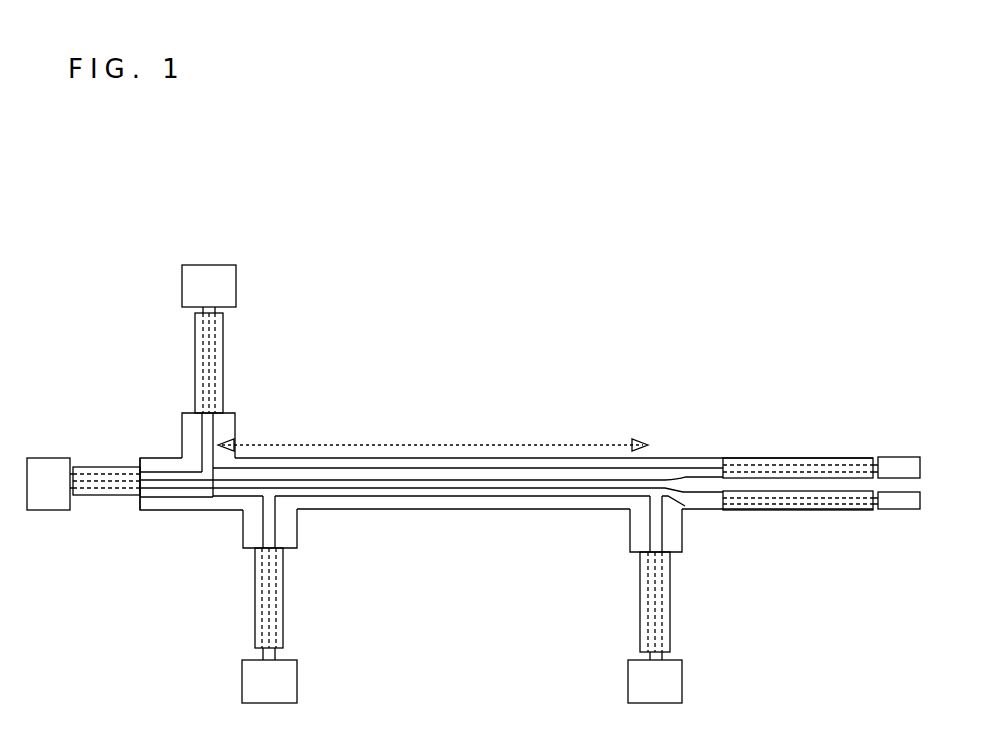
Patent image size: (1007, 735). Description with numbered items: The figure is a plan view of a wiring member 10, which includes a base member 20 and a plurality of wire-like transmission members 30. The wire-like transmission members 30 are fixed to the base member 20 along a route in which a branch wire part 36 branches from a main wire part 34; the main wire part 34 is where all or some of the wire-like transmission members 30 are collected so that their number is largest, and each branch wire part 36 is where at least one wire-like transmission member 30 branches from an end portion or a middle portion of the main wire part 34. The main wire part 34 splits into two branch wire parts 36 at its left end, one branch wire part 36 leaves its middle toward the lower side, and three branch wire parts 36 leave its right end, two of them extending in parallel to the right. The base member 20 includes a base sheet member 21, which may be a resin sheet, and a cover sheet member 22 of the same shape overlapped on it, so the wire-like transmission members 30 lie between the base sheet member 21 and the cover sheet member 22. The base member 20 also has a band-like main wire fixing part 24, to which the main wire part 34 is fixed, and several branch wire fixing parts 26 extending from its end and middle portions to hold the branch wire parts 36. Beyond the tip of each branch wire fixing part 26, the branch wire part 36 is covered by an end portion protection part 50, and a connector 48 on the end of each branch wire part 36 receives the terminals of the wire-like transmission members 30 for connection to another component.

The wiring member 10 is at (551, 355).
The base member 20 is at (478, 590).
The base sheet member 21 is at (493, 512).
The cover sheet member 22 is at (540, 512).
The main wire fixing part 24 is at (385, 513).
The main wire part 34 is at (442, 498).
The branch wire fixing part 26 is at (146, 456).
The wire-like transmission member 30 is at (225, 497).
The branch wire part 36 is at (92, 500).
The connector 48 is at (50, 457).
The end portion protection part 50 is at (108, 466).